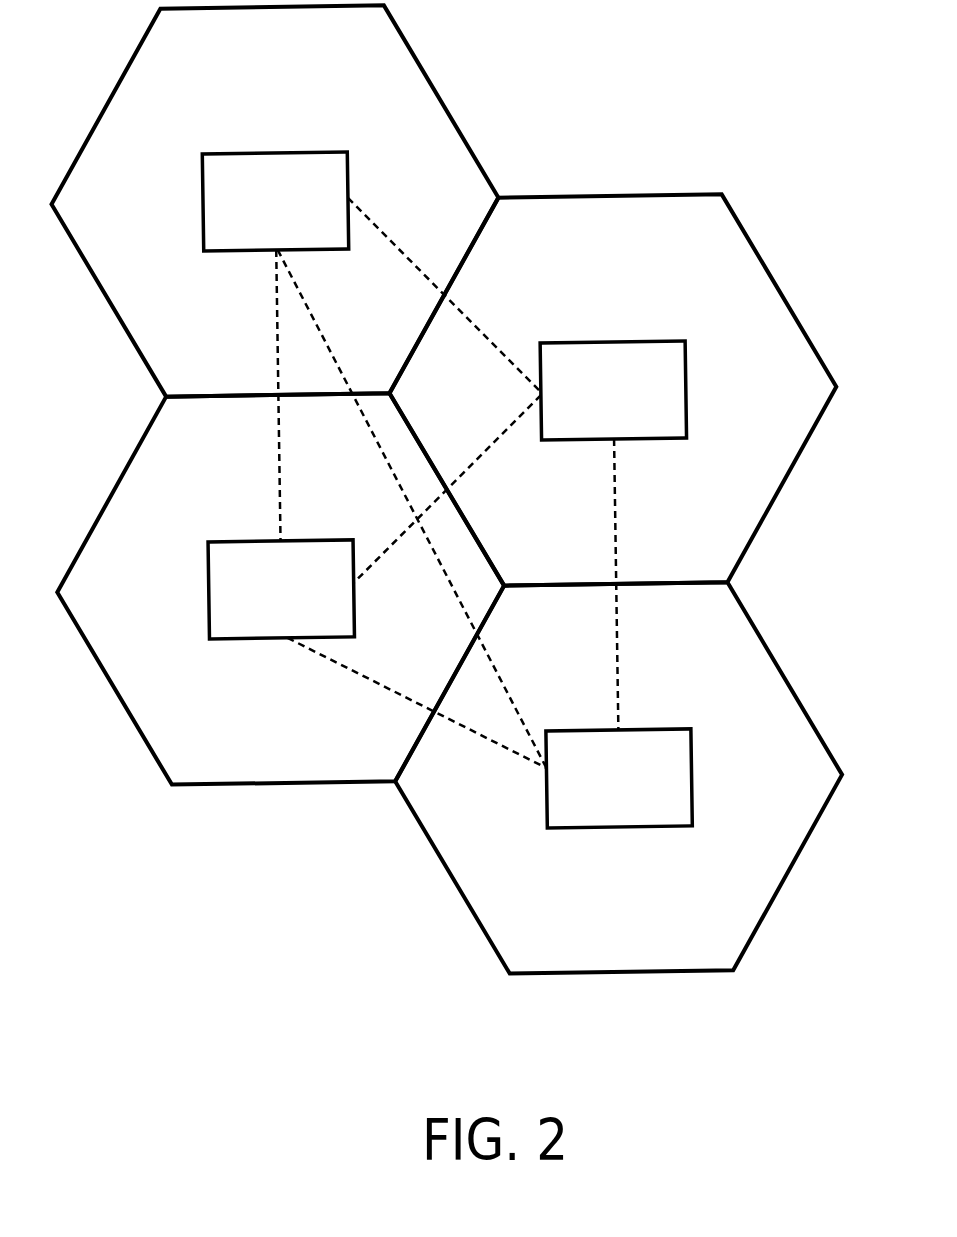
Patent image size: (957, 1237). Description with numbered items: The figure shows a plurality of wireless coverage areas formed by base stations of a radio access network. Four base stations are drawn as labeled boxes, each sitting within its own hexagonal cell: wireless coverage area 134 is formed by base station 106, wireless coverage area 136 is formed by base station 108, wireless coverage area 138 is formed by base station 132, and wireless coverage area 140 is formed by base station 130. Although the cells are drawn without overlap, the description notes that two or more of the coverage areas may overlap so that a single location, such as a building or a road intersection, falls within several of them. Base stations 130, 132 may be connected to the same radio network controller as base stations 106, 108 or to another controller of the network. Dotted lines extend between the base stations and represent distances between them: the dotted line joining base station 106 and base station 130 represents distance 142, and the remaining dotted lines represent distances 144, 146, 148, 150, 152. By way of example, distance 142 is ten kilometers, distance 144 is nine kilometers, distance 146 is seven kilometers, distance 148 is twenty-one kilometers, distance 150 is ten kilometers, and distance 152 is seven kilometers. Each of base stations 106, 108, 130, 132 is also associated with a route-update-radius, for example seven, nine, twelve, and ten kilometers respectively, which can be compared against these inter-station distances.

The base station 106 is at (250, 234).
The base station 108 is at (585, 428).
The base station 130 is at (250, 622).
The base station 132 is at (585, 816).
The wireless coverage area 134 is at (437, 82).
The wireless coverage area 136 is at (777, 280).
The wireless coverage area 138 is at (797, 690).
The wireless coverage area 140 is at (272, 787).
The distance 142 is at (278, 322).
The distance 144 is at (425, 277).
The distance 146 is at (483, 452).
The distance 148 is at (450, 588).
The distance 150 is at (614, 502).
The distance 152 is at (370, 683).